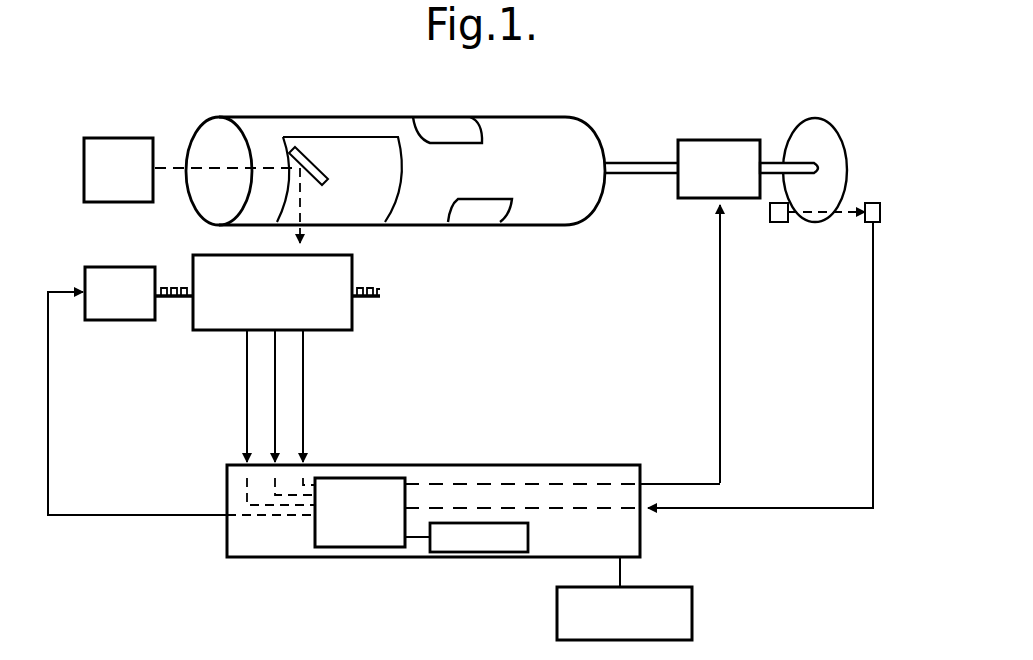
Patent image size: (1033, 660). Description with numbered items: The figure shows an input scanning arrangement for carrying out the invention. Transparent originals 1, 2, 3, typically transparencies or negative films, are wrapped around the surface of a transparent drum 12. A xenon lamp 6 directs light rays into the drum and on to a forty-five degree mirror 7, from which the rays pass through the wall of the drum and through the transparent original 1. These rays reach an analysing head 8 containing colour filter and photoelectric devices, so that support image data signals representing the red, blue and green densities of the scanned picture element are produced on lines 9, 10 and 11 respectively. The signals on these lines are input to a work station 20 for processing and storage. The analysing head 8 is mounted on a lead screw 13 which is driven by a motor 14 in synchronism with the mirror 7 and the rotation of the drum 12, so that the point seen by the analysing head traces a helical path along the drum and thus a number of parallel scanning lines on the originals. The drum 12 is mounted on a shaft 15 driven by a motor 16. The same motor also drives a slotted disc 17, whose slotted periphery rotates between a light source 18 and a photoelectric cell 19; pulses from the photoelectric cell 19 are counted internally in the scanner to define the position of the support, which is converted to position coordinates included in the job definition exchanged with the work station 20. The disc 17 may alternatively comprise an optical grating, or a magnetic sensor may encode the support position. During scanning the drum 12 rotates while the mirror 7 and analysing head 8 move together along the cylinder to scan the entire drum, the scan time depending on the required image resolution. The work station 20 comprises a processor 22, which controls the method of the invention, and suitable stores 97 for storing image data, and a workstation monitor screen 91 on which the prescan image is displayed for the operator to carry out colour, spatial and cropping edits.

The transparent original 1 is at (365, 147).
The transparent original 2 is at (443, 120).
The transparent original 3 is at (487, 213).
The xenon lamp 6 is at (115, 147).
The 45° mirror 7 is at (300, 147).
The analysing head 8 is at (195, 257).
The line 9 is at (247, 386).
The line 10 is at (275, 386).
The line 11 is at (303, 421).
The transparent drum 12 is at (532, 118).
The lead screw 13 is at (380, 294).
The motor 14 is at (118, 310).
The shaft 15 is at (638, 166).
The motor 16 is at (713, 148).
The slotted disc 17 is at (810, 122).
The light source 18 is at (777, 224).
The photoelectric cell 19 is at (875, 203).
The work station 20 is at (525, 466).
The processor 22 is at (357, 547).
The workstation monitor screen 91 is at (692, 612).
The stores 97 is at (473, 552).